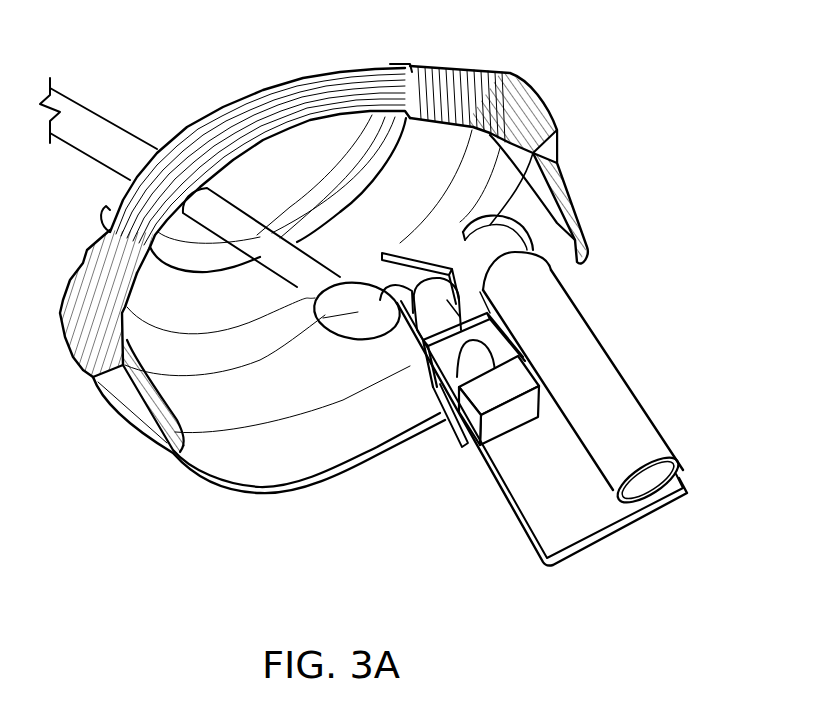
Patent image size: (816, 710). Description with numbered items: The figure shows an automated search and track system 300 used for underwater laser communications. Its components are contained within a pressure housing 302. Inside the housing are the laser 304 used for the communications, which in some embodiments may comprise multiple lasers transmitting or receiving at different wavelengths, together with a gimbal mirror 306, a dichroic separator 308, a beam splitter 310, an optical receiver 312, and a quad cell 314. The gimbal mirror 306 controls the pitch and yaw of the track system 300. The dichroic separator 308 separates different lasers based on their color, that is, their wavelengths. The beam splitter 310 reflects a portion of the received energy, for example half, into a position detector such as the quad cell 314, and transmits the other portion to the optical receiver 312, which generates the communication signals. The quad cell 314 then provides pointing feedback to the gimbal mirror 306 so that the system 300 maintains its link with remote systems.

The track system 300 is at (136, 64).
The pressure housing 302 is at (528, 76).
The laser 304 is at (636, 444).
The gimbal mirror 306 is at (317, 303).
The dichroic separator 308 is at (548, 292).
The beam splitter 310 is at (480, 332).
The optical receiver 312 is at (495, 390).
The quad cell 314 is at (440, 418).